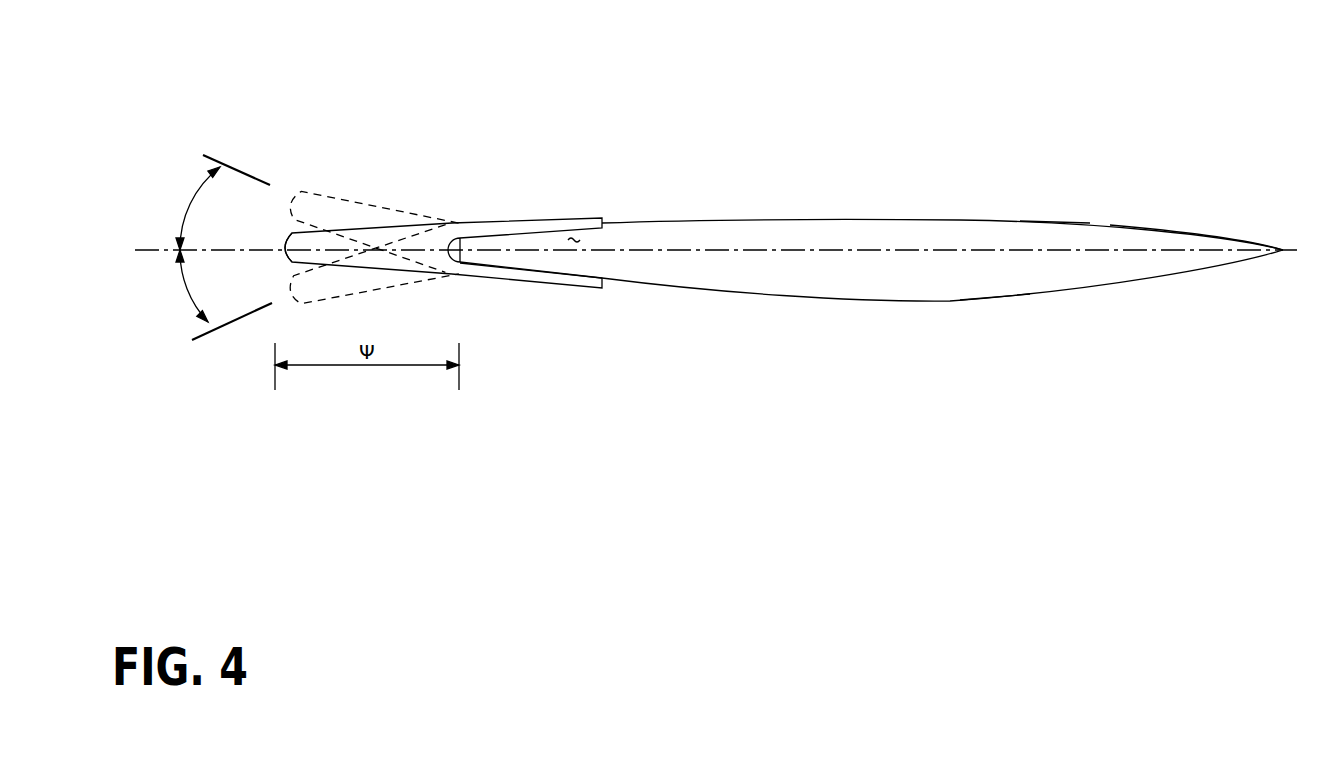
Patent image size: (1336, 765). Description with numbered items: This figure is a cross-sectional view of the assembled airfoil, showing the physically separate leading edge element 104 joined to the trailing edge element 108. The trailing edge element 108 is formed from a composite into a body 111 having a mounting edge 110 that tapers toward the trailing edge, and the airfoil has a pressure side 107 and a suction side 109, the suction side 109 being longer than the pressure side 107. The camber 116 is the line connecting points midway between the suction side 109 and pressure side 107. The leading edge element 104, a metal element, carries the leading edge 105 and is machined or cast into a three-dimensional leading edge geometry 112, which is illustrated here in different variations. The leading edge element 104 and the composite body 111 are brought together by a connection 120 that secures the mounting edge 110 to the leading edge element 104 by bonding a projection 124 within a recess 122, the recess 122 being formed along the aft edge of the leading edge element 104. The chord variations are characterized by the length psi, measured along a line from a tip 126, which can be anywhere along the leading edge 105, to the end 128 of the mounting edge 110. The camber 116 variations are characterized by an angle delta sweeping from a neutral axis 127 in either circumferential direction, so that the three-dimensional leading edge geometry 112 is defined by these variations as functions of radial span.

The leading edge element 104 is at (378, 222).
The leading edge 105 is at (280, 250).
The pressure side 107 is at (830, 298).
The trailing edge element 108 is at (792, 217).
The suction side 109 is at (1113, 224).
The mounting edge 110 is at (483, 243).
The body 111 is at (990, 298).
The 3-D leading edge geometry 112 is at (397, 218).
The camber 116 is at (1057, 222).
The connection 120 is at (538, 213).
The recess 122 is at (456, 232).
The projection 124 is at (574, 240).
The tip 126 is at (287, 240).
The neutral axis 127 is at (232, 252).
The end of the mounting edge 128 is at (460, 253).